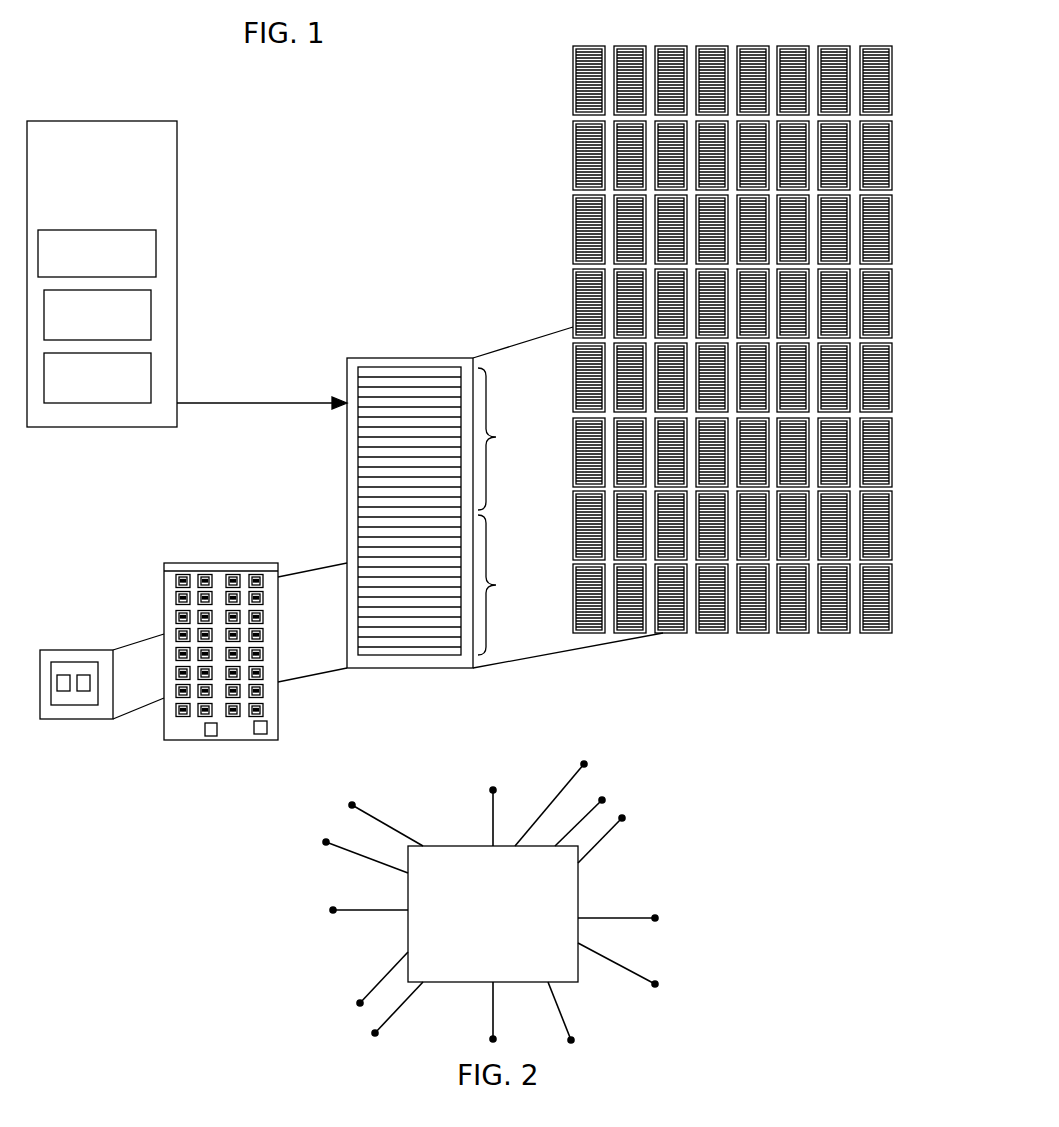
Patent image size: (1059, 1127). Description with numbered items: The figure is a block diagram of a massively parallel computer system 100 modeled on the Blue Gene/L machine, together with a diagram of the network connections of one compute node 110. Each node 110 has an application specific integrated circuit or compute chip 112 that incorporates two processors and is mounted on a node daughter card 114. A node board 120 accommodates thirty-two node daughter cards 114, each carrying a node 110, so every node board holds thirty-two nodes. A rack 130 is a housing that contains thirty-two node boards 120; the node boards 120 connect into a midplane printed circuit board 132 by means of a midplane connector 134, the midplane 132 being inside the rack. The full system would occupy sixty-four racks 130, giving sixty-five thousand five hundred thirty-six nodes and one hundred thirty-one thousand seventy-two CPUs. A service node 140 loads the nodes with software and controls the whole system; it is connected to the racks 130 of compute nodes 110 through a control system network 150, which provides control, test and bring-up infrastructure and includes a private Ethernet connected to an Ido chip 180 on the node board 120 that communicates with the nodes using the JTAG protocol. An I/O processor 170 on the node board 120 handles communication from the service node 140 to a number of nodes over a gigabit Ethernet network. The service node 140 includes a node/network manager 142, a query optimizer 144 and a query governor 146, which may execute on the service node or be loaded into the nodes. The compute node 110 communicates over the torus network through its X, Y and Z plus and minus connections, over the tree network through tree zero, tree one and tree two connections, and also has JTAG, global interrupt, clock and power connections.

In FIG. 1, the massively parallel computer system 100 is at (250, 148).
In FIG. 1, the compute node 110 is at (55, 650).
In FIG. 2, the compute node 110 is at (495, 892).
In FIG. 1, the application specific integrated circuit (compute chip) 112 is at (53, 705).
In FIG. 1, the node daughter card 114 is at (183, 718).
In FIG. 1, the node board 120 is at (278, 620).
In FIG. 1, the rack 130 is at (387, 357).
In FIG. 1, the midplane printed circuit board 132 is at (524, 511).
In FIG. 1, the midplane connector 134 is at (164, 568).
In FIG. 1, the service node 140 is at (133, 274).
In FIG. 1, the node/network manager 142 is at (156, 255).
In FIG. 1, the query optimizer 144 is at (151, 315).
In FIG. 1, the query governor 146 is at (151, 378).
In FIG. 1, the control system network 150 is at (205, 403).
In FIG. 1, the I/O processor 170 is at (211, 736).
In FIG. 1, the Ido chip 180 is at (263, 737).